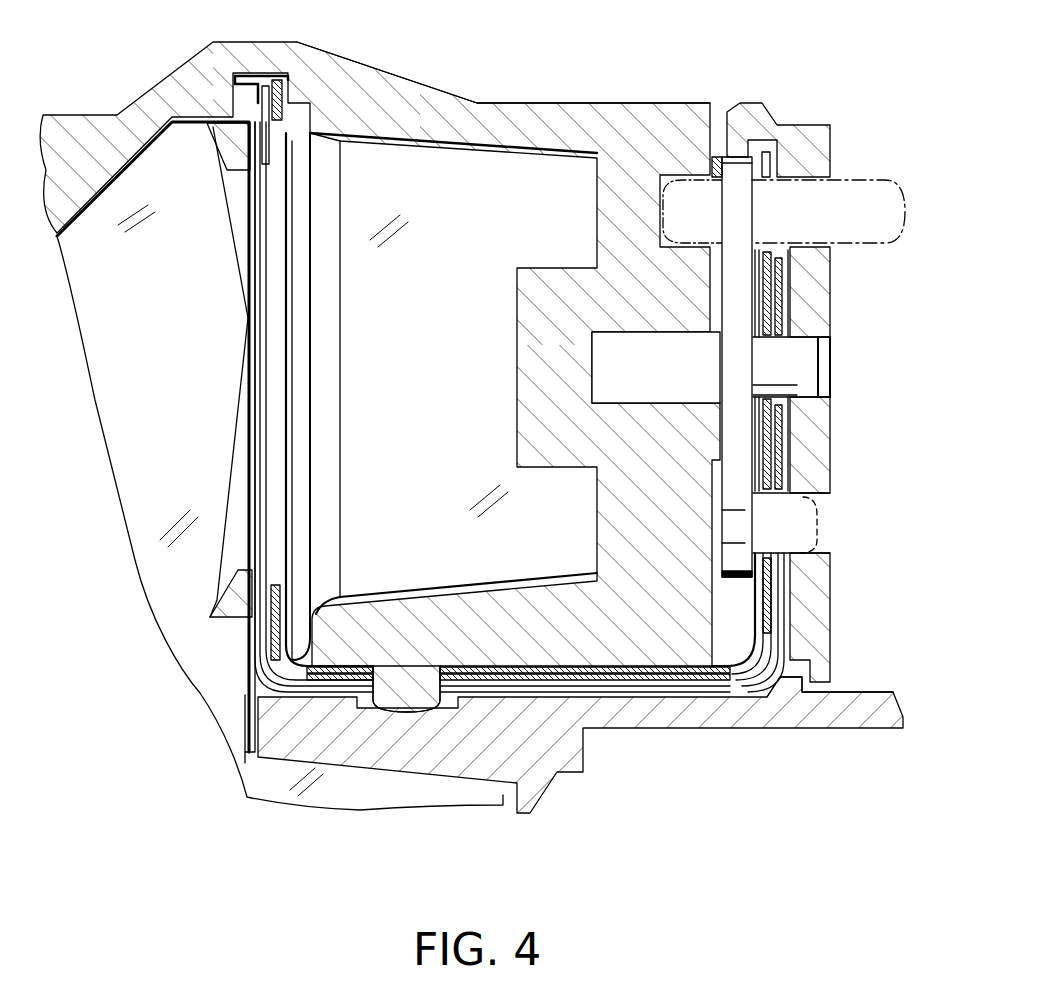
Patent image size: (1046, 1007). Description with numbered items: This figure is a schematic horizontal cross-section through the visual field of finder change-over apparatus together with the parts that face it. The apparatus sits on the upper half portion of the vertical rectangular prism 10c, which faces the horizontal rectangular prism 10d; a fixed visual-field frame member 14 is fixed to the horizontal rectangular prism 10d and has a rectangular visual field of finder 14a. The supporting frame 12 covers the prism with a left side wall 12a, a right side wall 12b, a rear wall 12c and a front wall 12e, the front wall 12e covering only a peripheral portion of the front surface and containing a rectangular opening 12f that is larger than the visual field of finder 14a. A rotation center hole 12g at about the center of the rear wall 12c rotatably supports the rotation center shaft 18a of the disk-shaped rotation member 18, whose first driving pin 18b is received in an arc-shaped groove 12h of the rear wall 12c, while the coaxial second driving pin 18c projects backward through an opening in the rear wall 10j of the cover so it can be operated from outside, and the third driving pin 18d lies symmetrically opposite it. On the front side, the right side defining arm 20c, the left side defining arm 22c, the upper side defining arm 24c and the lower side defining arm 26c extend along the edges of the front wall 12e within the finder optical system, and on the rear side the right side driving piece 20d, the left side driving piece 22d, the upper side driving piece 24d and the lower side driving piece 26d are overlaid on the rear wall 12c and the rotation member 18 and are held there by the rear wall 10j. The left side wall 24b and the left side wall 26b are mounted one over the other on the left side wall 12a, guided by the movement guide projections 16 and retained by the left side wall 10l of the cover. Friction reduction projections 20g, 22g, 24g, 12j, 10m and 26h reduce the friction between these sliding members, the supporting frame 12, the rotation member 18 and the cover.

The vertical rectangular prism 10c is at (482, 140).
The horizontal rectangular prism 10d is at (140, 483).
The rear wall of the cover of the finder unit 10j is at (812, 450).
The left side wall of the cover of the finder unit 10l is at (797, 718).
The friction reduction projections 10m is at (330, 702).
The supporting frame 12 is at (624, 98).
The left side wall 12a is at (403, 623).
The right side wall 12b is at (437, 132).
The rear wall 12c is at (690, 652).
The front wall 12e is at (302, 297).
The rectangular opening 12f is at (305, 612).
The rotation center hole 12g is at (640, 403).
The arc-shaped groove 12h is at (684, 246).
The friction reduction projections 12j is at (470, 640).
The fixed visual-field frame member 14 is at (245, 708).
The visual field of finder 14a is at (248, 178).
The movement guide projections 16 is at (407, 702).
The rotation member 18 is at (736, 582).
The rotation center shaft 18a is at (818, 378).
The first driving pin 18b is at (678, 190).
The second driving pin 18c is at (862, 180).
The third driving pin 18d is at (832, 547).
The visual field frame right side defining arm 20c is at (268, 78).
The visual field frame right side driving piece 20d is at (723, 158).
The friction reduction projections 20g is at (282, 102).
The visual field frame left side defining arm 22c is at (278, 580).
The visual field frame left side driving piece 22d is at (755, 290).
The friction reduction projections 22g is at (280, 622).
The left side wall 24b is at (610, 680).
The visual field frame upper side defining arm 24c is at (268, 366).
The visual field frame upper side driving piece 24d is at (772, 556).
The friction reduction projections 24g is at (270, 160).
The left side wall 26b is at (537, 682).
The visual field frame lower side defining arm 26c is at (276, 702).
The visual field frame lower side driving piece 26d is at (782, 292).
The friction reduction projections 26h is at (670, 684).